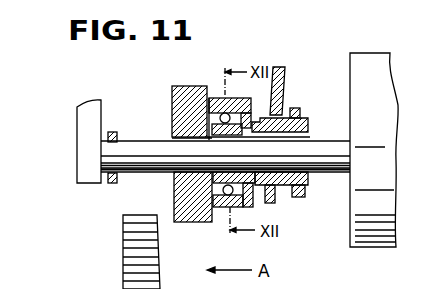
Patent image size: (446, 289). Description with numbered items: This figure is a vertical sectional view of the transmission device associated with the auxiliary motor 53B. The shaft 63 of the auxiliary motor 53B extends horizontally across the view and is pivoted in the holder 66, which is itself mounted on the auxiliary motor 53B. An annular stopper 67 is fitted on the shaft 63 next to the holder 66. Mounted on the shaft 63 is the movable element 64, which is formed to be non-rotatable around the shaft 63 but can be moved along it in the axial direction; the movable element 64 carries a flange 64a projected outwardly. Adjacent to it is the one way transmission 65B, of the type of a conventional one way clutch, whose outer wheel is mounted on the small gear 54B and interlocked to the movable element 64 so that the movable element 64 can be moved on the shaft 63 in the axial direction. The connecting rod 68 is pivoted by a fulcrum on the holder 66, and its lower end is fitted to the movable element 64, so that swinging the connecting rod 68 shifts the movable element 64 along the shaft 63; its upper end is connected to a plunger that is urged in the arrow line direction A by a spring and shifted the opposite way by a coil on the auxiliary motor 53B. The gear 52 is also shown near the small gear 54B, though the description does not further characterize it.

The gear 52 is at (123, 258).
The auxiliary motor 53B is at (362, 53).
The small gear 54B is at (183, 86).
The shaft 63 is at (326, 165).
The movable element 64 is at (305, 122).
The flange 64a is at (296, 110).
The one way transmission 65B is at (222, 96).
The holder 66 is at (77, 144).
The annular stopper 67 is at (112, 132).
The connecting rod 68 is at (285, 72).